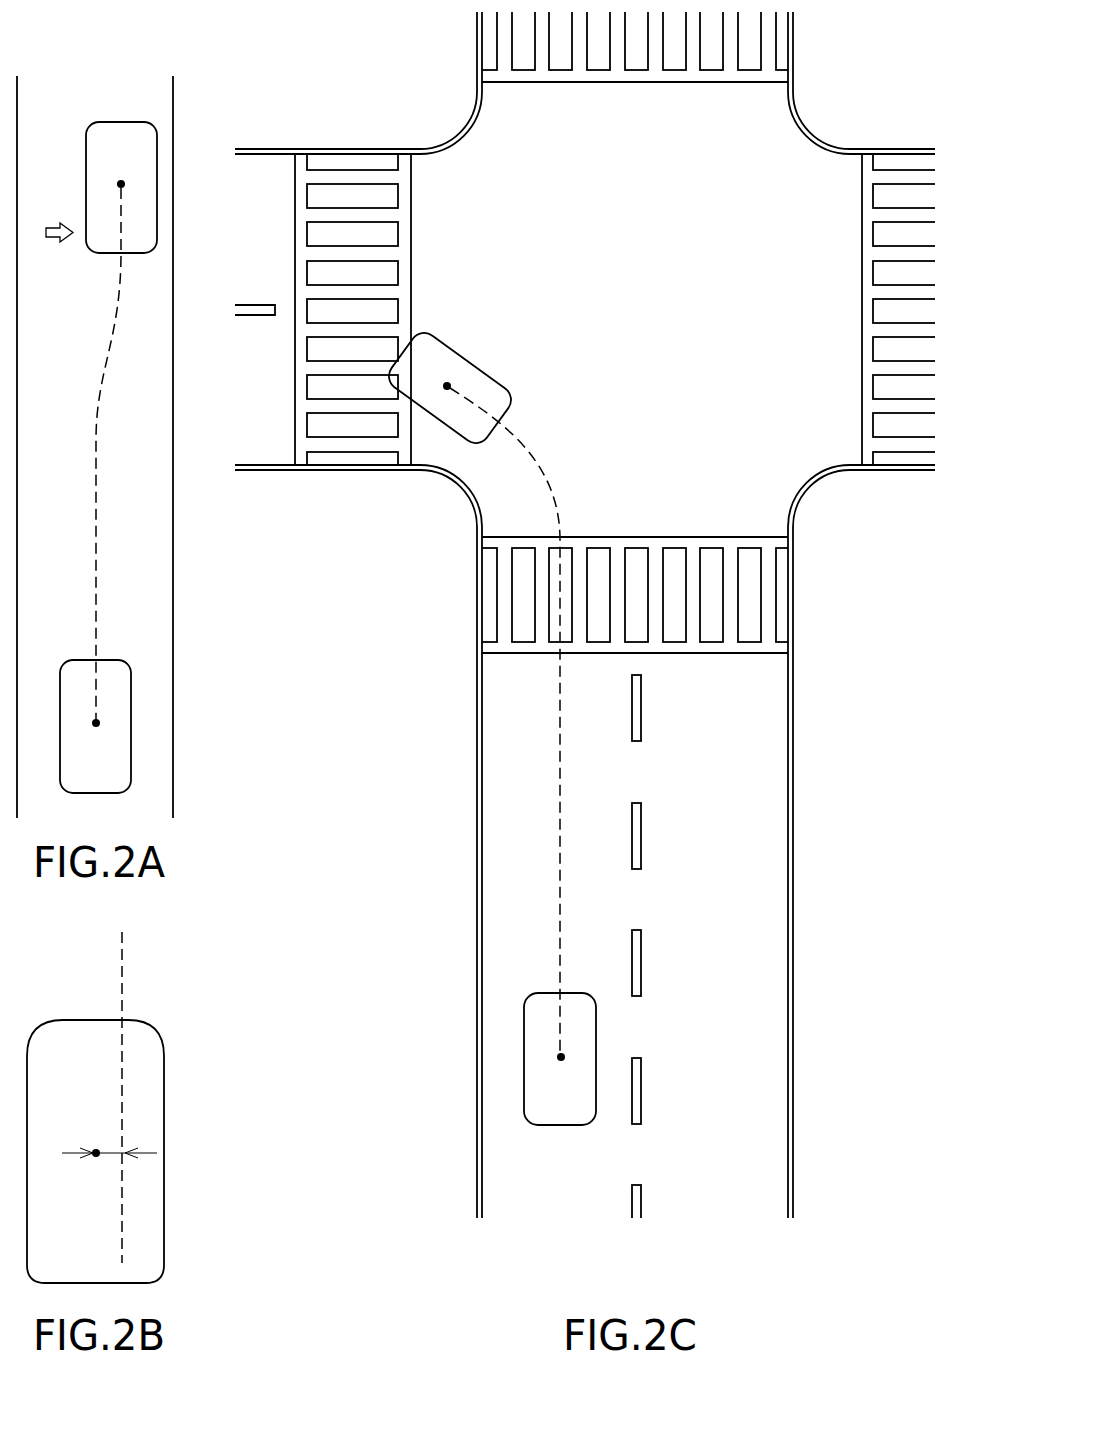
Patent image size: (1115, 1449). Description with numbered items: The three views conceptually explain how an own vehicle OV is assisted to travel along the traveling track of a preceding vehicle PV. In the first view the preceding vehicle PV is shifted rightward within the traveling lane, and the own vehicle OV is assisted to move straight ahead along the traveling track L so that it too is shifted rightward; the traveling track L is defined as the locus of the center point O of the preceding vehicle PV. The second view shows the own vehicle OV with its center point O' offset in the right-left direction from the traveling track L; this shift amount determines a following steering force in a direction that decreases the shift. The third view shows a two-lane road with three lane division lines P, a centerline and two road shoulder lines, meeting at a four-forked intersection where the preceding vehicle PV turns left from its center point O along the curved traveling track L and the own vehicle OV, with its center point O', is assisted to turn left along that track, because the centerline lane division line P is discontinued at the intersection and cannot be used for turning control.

In FIG. 2A, the preceding vehicle PV is at (145, 158).
In FIG. 2C, the preceding vehicle PV is at (450, 360).
In FIG. 2A, the own vehicle OV is at (116, 678).
In FIG. 2B, the own vehicle OV is at (150, 1128).
In FIG. 2C, the own vehicle OV is at (573, 1118).
In FIG. 2A, the center point of the preceding vehicle O is at (113, 157).
In FIG. 2C, the center point of the preceding vehicle O is at (462, 408).
In FIG. 2A, the center point of the own vehicle O' is at (85, 750).
In FIG. 2B, the center point of the own vehicle O' is at (85, 1188).
In FIG. 2C, the center point of the own vehicle O' is at (550, 1082).
In FIG. 2A, the traveling track L is at (96, 503).
In FIG. 2B, the traveling track L is at (122, 948).
In FIG. 2C, the traveling track L is at (557, 507).
In FIG. 2C, the lane division line P is at (482, 826).